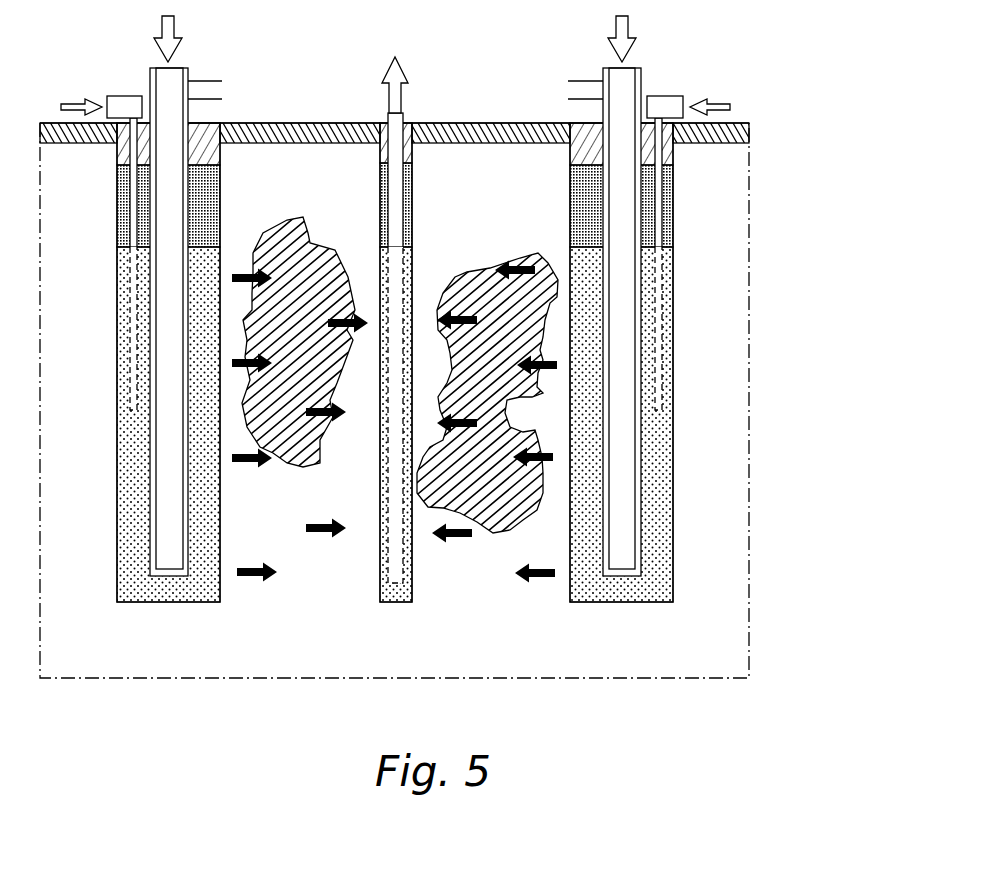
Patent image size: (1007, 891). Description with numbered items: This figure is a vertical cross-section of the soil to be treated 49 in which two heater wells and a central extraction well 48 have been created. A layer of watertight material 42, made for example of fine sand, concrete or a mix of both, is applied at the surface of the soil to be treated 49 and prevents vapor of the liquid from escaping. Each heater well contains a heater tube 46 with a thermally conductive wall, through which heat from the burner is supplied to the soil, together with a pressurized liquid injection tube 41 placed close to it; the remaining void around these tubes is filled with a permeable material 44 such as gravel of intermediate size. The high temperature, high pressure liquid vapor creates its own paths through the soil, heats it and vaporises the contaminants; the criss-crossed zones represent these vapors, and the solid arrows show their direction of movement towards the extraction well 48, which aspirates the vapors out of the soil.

The pressurized liquid injection tube 41 is at (656, 207).
The layer of watertight material 42 is at (740, 133).
The permeable material 44 is at (647, 517).
The heater tube 46 is at (618, 436).
The extraction well 48 is at (396, 597).
The soil to be treated 49 is at (718, 615).